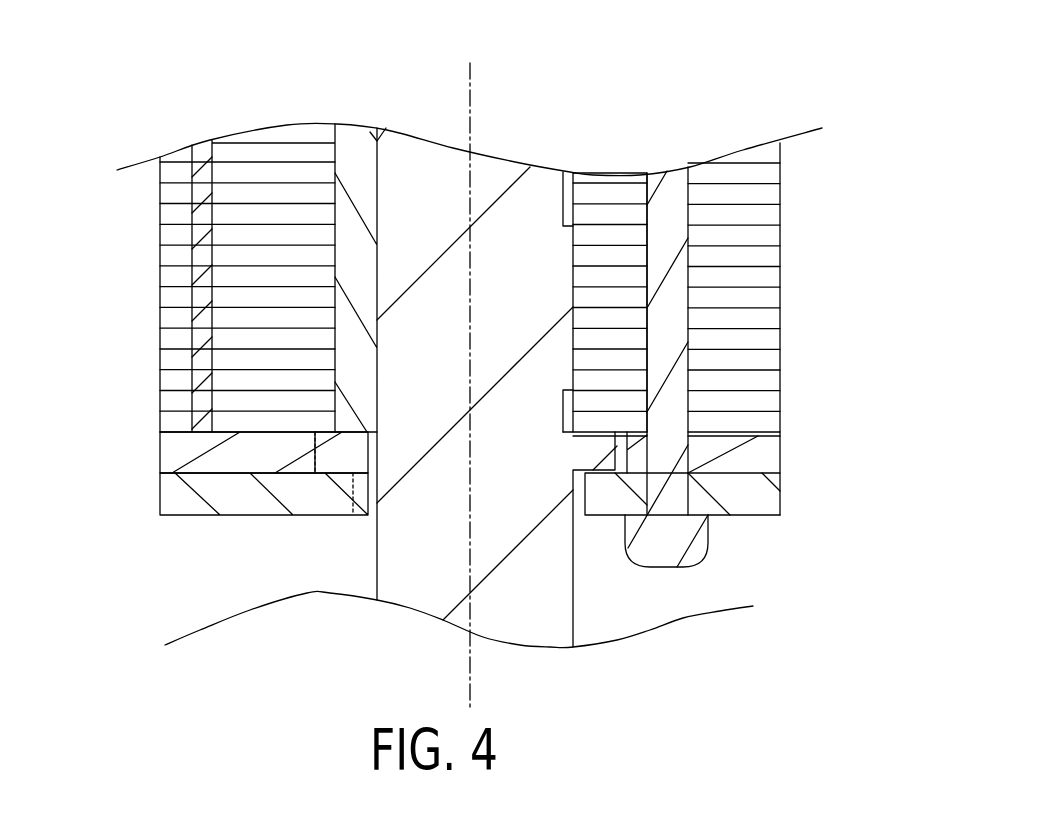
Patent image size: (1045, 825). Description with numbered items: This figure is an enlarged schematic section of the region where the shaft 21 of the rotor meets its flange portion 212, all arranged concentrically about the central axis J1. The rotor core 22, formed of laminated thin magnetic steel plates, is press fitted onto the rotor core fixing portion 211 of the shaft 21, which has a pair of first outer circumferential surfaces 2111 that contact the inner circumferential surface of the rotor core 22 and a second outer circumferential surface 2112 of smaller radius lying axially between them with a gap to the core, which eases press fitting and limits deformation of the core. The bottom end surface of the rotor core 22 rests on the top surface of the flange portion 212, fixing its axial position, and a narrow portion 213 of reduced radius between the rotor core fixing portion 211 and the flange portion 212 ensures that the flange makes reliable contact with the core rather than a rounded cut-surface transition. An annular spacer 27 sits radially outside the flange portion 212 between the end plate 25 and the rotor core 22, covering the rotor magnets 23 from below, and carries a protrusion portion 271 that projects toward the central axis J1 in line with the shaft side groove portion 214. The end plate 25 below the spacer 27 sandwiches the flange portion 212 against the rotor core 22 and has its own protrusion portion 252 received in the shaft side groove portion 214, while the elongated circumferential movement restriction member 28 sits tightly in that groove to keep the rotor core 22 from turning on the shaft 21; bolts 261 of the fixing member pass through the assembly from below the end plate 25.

The central axis J1 is at (473, 95).
The shaft 21 is at (450, 136).
The rotor core fixing portion 211 is at (642, 239).
The first outer circumferential surfaces 2111 is at (573, 258).
The second outer circumferential surface 2112 is at (565, 183).
The flange portion 212 is at (590, 452).
The narrow portion 213 is at (563, 412).
The shaft side groove portion 214 is at (383, 168).
The rotor core 22 is at (798, 246).
The rotor magnets 23 is at (202, 152).
The end plate 25 is at (147, 503).
The protrusion portion 252 is at (360, 512).
The bolts 261 is at (680, 208).
The spacer 27 is at (147, 457).
The protrusion portion 271 is at (337, 452).
The circumferential movement restriction member 28 is at (352, 148).